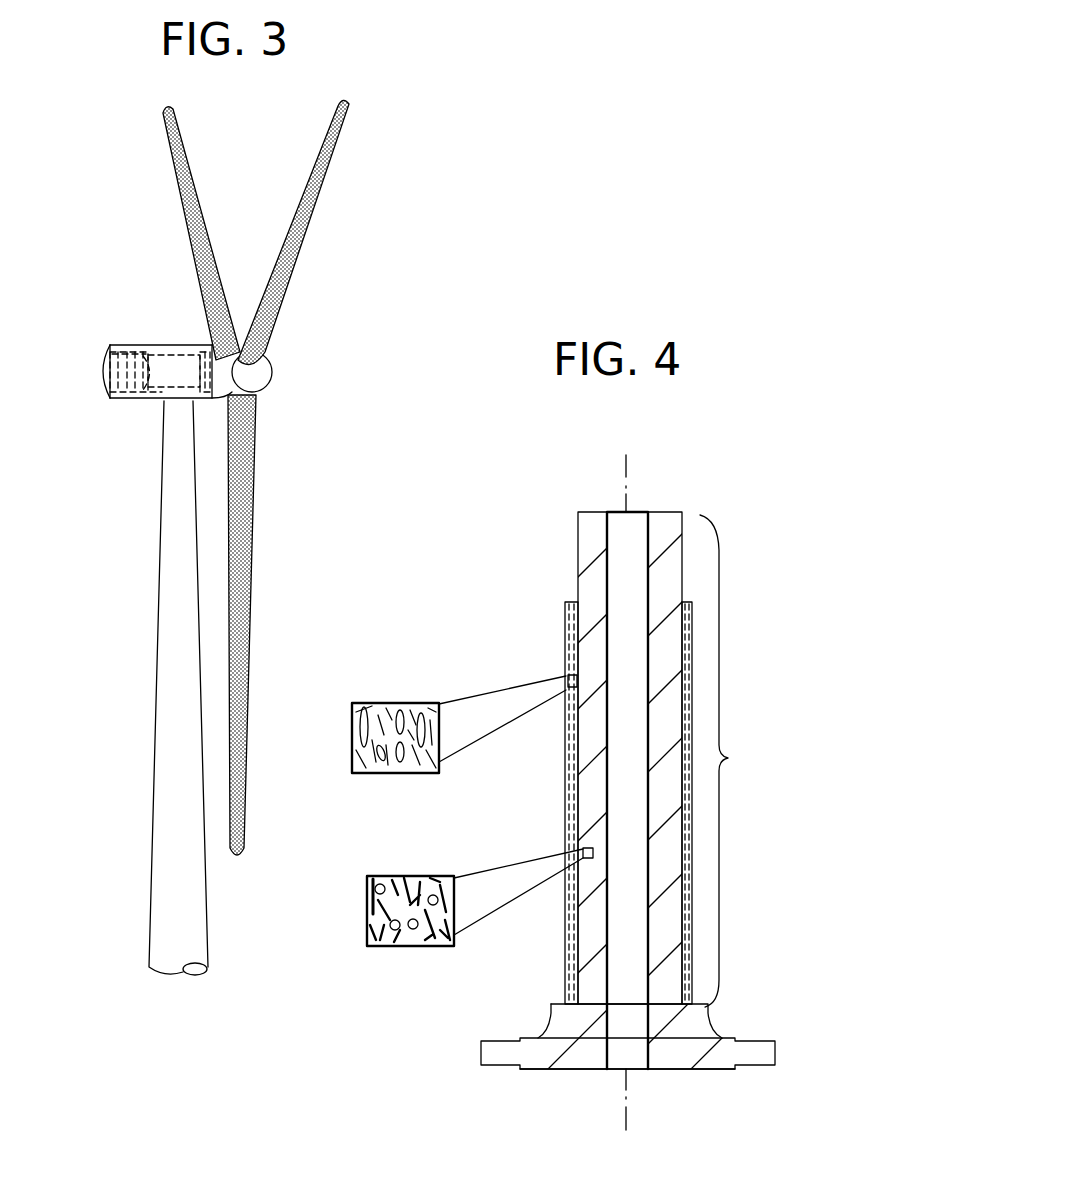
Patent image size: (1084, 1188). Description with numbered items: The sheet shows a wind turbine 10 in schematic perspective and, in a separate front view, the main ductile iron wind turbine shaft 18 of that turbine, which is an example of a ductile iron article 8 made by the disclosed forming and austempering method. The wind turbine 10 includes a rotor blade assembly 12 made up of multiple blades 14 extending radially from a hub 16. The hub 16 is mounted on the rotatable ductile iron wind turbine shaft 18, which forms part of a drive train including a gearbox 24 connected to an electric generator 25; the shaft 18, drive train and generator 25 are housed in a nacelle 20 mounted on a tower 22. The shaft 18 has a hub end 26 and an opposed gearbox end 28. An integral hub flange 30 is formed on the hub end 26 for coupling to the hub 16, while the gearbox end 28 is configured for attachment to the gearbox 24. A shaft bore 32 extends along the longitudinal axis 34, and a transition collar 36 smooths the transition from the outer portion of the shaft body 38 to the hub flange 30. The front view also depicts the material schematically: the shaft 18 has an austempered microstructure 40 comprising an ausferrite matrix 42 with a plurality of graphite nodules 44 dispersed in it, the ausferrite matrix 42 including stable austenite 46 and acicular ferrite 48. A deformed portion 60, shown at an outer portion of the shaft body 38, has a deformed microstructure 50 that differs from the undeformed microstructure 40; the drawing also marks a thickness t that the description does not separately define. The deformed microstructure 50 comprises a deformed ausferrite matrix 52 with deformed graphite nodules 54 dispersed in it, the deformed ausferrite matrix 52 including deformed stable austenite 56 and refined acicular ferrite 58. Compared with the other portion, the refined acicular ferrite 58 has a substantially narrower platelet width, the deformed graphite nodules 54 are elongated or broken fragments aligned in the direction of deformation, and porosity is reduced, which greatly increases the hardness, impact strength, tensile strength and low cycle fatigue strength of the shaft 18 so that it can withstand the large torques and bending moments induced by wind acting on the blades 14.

In FIG. 4, the ductile iron article 8 is at (569, 763).
In FIG. 3, the wind turbine 10 is at (238, 537).
In FIG. 3, the rotor blade assembly 12 is at (300, 477).
In FIG. 3, the blades 14 is at (188, 168).
In FIG. 3, the hub 16 is at (269, 378).
In FIG. 3, the ductile iron wind turbine shaft 18 is at (153, 349).
In FIG. 4, the ductile iron wind turbine shaft 18 is at (665, 510).
In FIG. 3, the nacelle 20 is at (136, 371).
In FIG. 3, the tower 22 is at (170, 625).
In FIG. 3, the gearbox 24 is at (130, 343).
In FIG. 4, the gearbox 24 is at (578, 1071).
In FIG. 3, the electric generator 25 is at (117, 345).
In FIG. 3, the hub end 26 is at (180, 352).
In FIG. 4, the hub end 26 is at (599, 510).
In FIG. 3, the gearbox end 28 is at (157, 395).
In FIG. 3, the hub flange 30 is at (195, 342).
In FIG. 4, the hub flange 30 is at (482, 1043).
In FIG. 4, the shaft bore 32 is at (608, 963).
In FIG. 4, the longitudinal axis 34 is at (628, 1118).
In FIG. 4, the transition collar 36 is at (546, 1022).
In FIG. 4, the shaft body 38 is at (736, 761).
In FIG. 4, the austempered microstructure 40 is at (585, 845).
In FIG. 4, the ausferrite matrix 42 is at (401, 910).
In FIG. 4, the graphite nodules 44 is at (418, 946).
In FIG. 4, the stable austenite 46 is at (392, 946).
In FIG. 4, the acicular ferrite 48 is at (437, 946).
In FIG. 4, the deformed microstructure 50 is at (566, 671).
In FIG. 4, the deformed ausferrite matrix 52 is at (398, 724).
In FIG. 4, the deformed graphite nodules 54 is at (400, 773).
In FIG. 4, the deformed stable austenite 56 is at (375, 772).
In FIG. 4, the refined acicular ferrite 58 is at (418, 772).
In FIG. 4, the deformed portion 60 is at (566, 613).
In FIG. 4, the thickness t is at (392, 908).